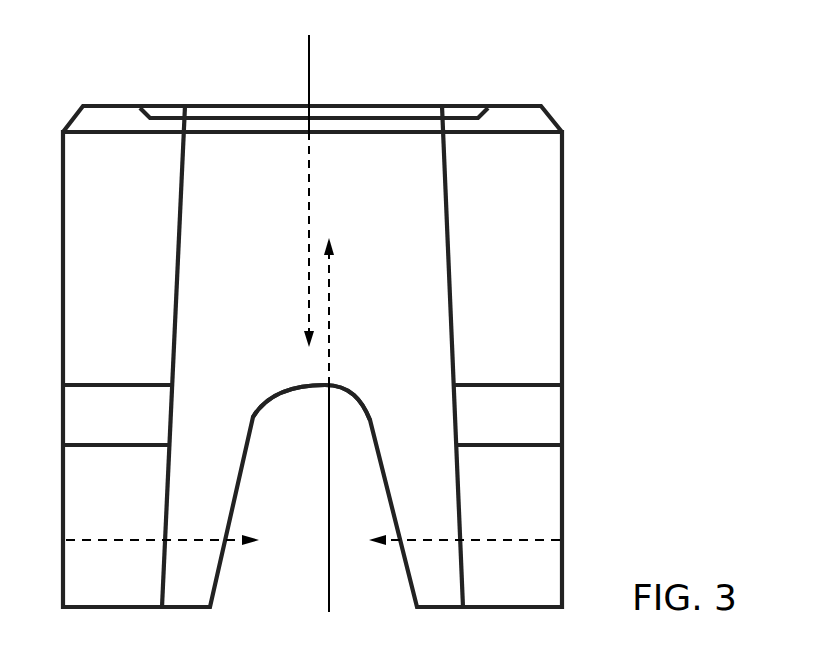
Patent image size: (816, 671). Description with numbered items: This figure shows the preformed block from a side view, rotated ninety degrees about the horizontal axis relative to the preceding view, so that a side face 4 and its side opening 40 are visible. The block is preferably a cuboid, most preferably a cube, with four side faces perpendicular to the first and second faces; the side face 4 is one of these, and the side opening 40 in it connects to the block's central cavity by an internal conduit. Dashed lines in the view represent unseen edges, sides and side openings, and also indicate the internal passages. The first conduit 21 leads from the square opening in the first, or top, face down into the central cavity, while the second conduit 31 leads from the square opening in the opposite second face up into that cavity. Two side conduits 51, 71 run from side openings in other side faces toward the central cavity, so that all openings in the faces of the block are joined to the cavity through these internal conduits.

The side face 4 is at (528, 273).
The first conduit 21 is at (311, 179).
The second conduit 31 is at (329, 437).
The side opening 40 is at (408, 578).
The side conduit 51 is at (143, 541).
The side conduit 71 is at (486, 541).